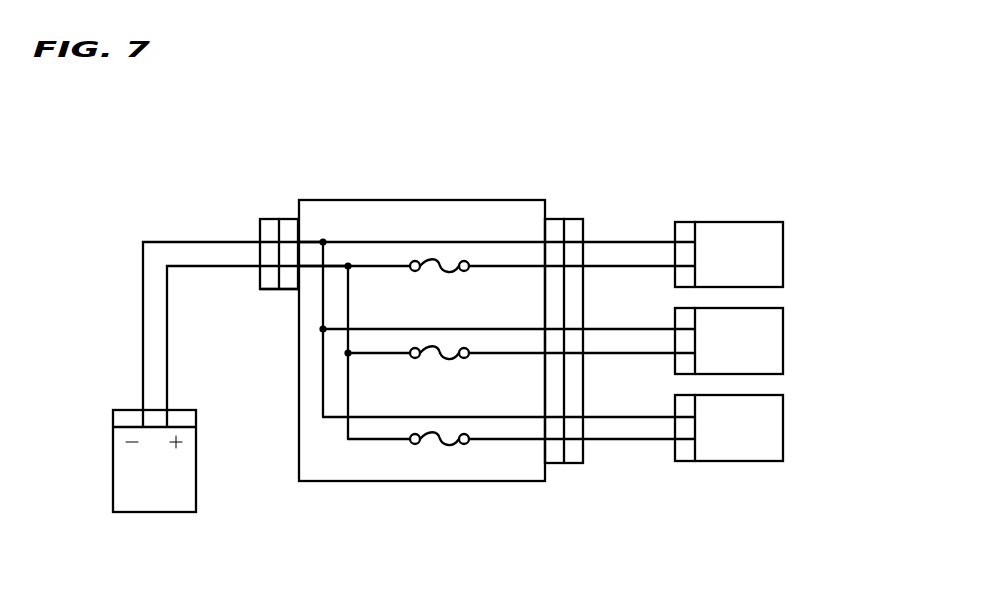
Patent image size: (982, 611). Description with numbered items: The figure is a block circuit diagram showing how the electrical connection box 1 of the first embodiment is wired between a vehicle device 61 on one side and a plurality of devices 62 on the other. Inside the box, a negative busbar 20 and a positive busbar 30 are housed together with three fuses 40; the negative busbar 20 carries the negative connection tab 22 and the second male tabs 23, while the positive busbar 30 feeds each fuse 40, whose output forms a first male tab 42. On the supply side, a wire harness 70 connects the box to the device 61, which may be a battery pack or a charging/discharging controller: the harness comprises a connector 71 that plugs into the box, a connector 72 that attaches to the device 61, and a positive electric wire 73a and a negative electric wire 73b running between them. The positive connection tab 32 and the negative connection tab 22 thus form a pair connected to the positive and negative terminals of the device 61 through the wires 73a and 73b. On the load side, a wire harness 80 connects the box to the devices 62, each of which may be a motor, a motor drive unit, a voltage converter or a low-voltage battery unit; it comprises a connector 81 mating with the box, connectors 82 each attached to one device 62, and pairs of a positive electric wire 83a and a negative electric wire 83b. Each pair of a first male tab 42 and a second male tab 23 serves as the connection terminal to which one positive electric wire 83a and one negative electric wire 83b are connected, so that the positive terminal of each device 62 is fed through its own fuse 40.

The electrical connection box 1 is at (508, 182).
The negative busbar 20 is at (380, 243).
The negative connection tab 22 is at (289, 238).
The second male tab 23 is at (553, 242).
The positive busbar 30 is at (347, 428).
The positive connection tab 32 is at (286, 290).
The fuse 40 is at (438, 271).
The first male tab 42 is at (553, 267).
The device 61 is at (154, 464).
The device 62 is at (784, 253).
The wire harness 70 is at (209, 291).
The connector 71 is at (272, 218).
The connector 72 is at (124, 408).
The positive electric wire 73a is at (167, 331).
The negative electric wire 73b is at (143, 331).
The wire harness 80 is at (601, 331).
The connector 81 is at (571, 218).
The connector 82 is at (685, 221).
The positive electric wire 83a is at (607, 267).
The negative electric wire 83b is at (647, 243).